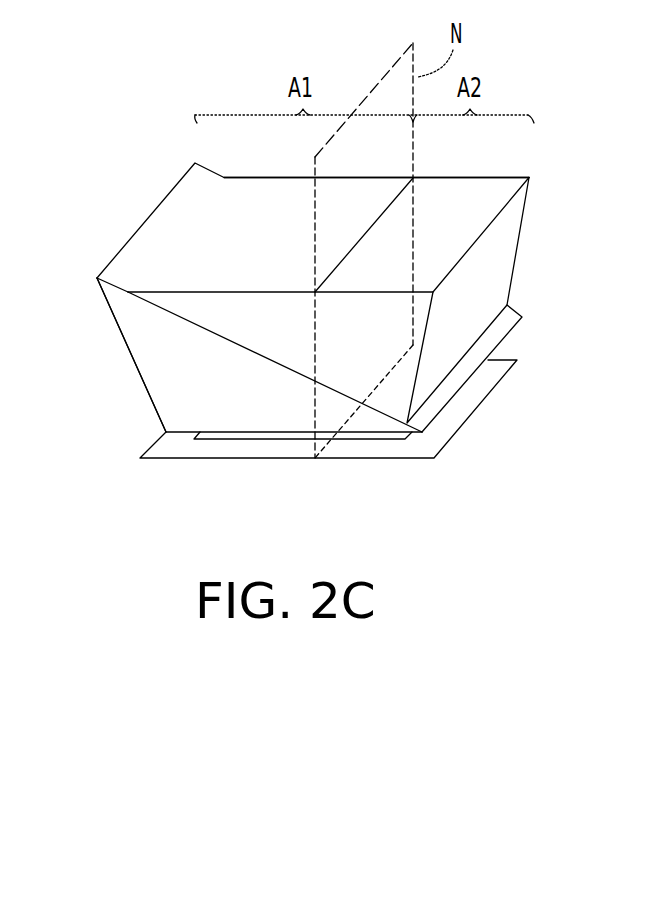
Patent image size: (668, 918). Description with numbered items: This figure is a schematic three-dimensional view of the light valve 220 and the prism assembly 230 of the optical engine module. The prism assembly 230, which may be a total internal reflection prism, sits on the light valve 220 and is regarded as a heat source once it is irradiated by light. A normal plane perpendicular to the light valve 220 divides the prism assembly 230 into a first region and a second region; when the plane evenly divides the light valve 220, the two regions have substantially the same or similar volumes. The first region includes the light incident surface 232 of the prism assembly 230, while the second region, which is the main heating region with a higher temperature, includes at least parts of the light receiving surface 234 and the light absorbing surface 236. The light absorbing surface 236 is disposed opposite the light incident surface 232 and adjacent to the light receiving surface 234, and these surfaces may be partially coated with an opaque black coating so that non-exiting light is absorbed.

The light valve 220 is at (388, 460).
The prism assembly 230 is at (356, 292).
The light incident surface 232 is at (130, 355).
The light receiving surface 234 is at (477, 200).
The light absorbing surface 236 is at (462, 315).